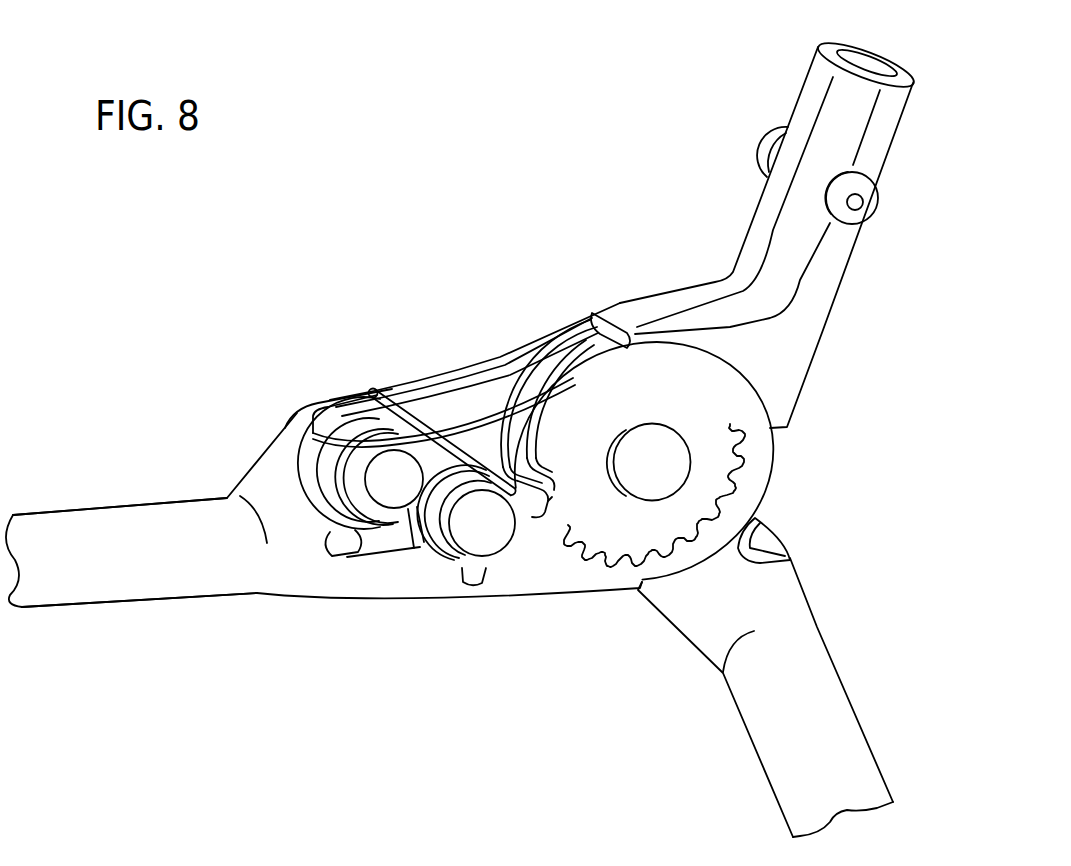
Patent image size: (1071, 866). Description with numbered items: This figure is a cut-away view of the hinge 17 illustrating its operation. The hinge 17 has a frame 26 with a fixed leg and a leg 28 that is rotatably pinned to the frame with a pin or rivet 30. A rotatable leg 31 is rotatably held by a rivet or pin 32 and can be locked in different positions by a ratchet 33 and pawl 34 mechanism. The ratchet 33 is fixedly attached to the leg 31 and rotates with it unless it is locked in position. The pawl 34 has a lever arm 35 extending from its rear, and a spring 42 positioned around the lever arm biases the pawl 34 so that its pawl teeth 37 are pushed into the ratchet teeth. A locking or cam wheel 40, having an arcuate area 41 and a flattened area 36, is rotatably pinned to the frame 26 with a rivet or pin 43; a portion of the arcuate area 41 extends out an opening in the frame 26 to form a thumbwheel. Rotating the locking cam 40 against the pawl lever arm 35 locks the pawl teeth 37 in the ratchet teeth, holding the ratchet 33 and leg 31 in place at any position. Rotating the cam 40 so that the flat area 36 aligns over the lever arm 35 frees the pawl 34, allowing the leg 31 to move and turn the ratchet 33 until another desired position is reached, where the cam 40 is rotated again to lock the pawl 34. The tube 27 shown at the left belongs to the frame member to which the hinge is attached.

The hinge 17 is at (607, 281).
The frame 26 is at (458, 373).
The frame tube 27 is at (128, 522).
The leg 28 is at (770, 708).
The pin or rivet 30 is at (478, 540).
The rotatable leg 31 is at (800, 230).
The rivet or pin 32 is at (652, 457).
The ratchet 33 is at (722, 482).
The pawl 34 is at (529, 570).
The lever arm 35 is at (358, 548).
The flattened area 36 is at (418, 510).
The pawl teeth 37 is at (567, 548).
The locking or cam wheel 40 is at (347, 423).
The arcuate area 41 is at (310, 494).
The spring 42 is at (418, 420).
The rivet or pin 43 is at (397, 482).